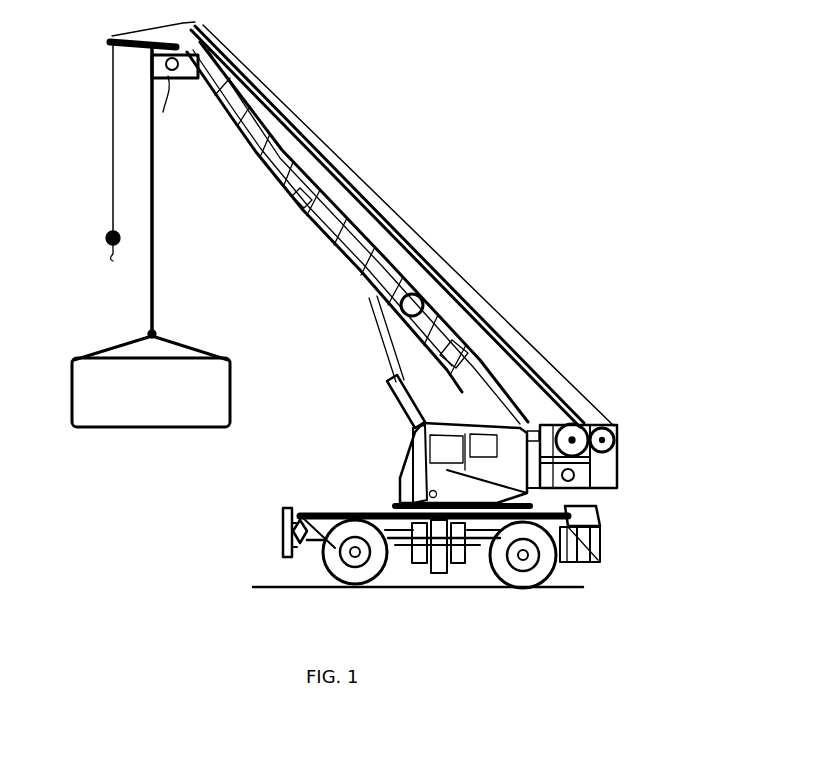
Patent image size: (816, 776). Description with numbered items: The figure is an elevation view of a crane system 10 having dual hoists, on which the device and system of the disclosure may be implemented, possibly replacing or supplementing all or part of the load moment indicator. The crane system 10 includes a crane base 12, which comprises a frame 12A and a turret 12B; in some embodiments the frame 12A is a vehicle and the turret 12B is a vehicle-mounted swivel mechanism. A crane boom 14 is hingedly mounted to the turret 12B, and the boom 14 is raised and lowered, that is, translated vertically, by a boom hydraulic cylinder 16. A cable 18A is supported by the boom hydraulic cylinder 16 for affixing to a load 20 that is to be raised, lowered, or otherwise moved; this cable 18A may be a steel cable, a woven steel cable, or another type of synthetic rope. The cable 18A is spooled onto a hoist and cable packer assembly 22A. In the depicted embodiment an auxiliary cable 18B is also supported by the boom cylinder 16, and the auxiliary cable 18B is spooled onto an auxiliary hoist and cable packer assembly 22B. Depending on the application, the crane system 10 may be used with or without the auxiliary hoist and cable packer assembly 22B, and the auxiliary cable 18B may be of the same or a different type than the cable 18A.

The crane system 10 is at (578, 76).
The crane base 12 is at (370, 481).
The frame 12A is at (273, 532).
The turret 12B is at (622, 459).
The crane boom 14 is at (270, 184).
The boom hydraulic cylinder 16 is at (333, 255).
The cable 18A is at (165, 296).
The auxiliary cable 18B is at (104, 158).
The load 20 is at (170, 406).
The hoist and cable packer assembly 22A is at (579, 416).
The auxiliary hoist and cable packer assembly 22B is at (617, 428).